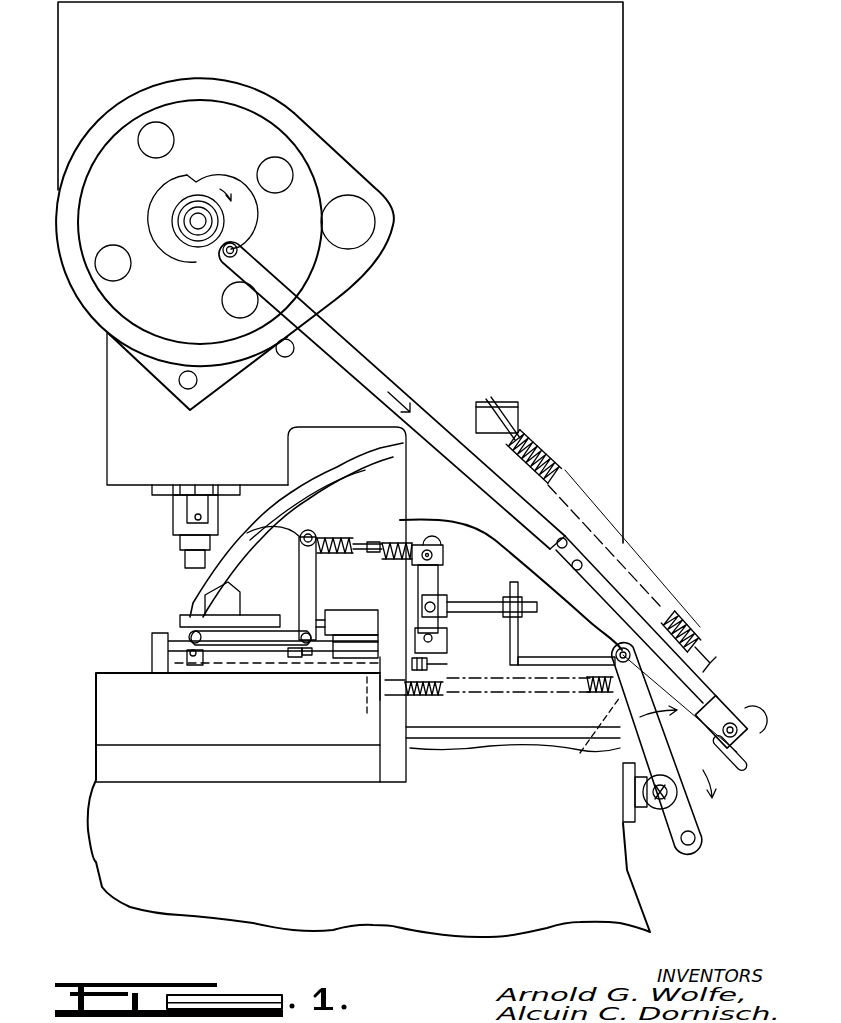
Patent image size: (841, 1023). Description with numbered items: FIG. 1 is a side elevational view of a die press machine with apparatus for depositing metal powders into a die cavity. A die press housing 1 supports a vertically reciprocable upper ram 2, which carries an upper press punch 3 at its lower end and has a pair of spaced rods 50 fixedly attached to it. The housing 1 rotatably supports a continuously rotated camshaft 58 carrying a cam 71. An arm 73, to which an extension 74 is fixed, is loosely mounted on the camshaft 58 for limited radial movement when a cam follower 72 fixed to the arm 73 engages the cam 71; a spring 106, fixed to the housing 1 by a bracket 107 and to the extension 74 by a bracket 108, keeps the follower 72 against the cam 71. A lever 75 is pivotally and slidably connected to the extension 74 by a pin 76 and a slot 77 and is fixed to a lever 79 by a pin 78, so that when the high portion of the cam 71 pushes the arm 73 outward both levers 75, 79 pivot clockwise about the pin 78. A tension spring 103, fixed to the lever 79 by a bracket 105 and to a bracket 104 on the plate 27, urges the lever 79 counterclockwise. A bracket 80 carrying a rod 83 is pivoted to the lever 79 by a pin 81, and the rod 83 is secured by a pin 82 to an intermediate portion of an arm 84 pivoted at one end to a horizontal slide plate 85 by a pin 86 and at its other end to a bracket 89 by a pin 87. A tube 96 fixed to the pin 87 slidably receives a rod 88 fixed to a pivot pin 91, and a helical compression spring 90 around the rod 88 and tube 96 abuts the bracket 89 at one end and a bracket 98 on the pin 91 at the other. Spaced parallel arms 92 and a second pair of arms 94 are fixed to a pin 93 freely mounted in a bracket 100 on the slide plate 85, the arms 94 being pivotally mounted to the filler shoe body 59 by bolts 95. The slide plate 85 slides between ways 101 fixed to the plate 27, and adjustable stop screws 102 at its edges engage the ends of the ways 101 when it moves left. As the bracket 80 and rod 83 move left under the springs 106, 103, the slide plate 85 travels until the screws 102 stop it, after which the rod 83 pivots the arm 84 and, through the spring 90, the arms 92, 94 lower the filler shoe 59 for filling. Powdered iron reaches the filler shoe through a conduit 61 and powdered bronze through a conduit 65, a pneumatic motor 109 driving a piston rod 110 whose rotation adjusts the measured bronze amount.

The die press housing 1 is at (603, 173).
The upper ram 2 is at (157, 490).
The upper press punch 3 is at (187, 558).
The plate 27 is at (100, 705).
The rods 50 is at (207, 517).
The camshaft 58 is at (197, 218).
The filler shoe body 59 is at (157, 648).
The conduit 61 is at (298, 473).
The conduit 65 is at (320, 553).
The cam 71 is at (243, 210).
The cam follower 72 is at (238, 252).
The arm 73 is at (360, 362).
The extension 74 is at (715, 682).
The lever 75 is at (723, 780).
The pin 76 is at (750, 753).
The slot 77 is at (747, 712).
The pin 78 is at (650, 792).
The lever 79 is at (645, 737).
The bracket 80 is at (548, 650).
The pin 81 is at (613, 653).
The pin 82 is at (427, 607).
The rod 83 is at (462, 603).
The arm 84 is at (433, 577).
The horizontal slide plate 85 is at (351, 707).
The pin 86 is at (433, 638).
The pin 87 is at (437, 537).
The rod 88 is at (383, 547).
The bracket 89 is at (433, 553).
The helical compression spring 90 is at (343, 540).
The pivot pin 91 is at (313, 537).
The spaced parallel arms 92 is at (307, 582).
The pin 93 is at (303, 645).
The spaced parallel arms 94 is at (247, 643).
The bolts 95 is at (195, 631).
The tube 96 is at (400, 517).
The bracket 98 is at (280, 532).
The bracket 100 is at (293, 657).
The ways 101 is at (343, 660).
The adjustable stop screw 102 is at (443, 663).
The tension spring 103 is at (590, 692).
The bracket 104 is at (403, 710).
The bracket 105 is at (624, 623).
The spring 106 is at (548, 448).
The bracket 107 is at (520, 405).
The bracket 108 is at (715, 650).
The pneumatic motor 109 is at (370, 603).
The piston rod 110 is at (300, 613).